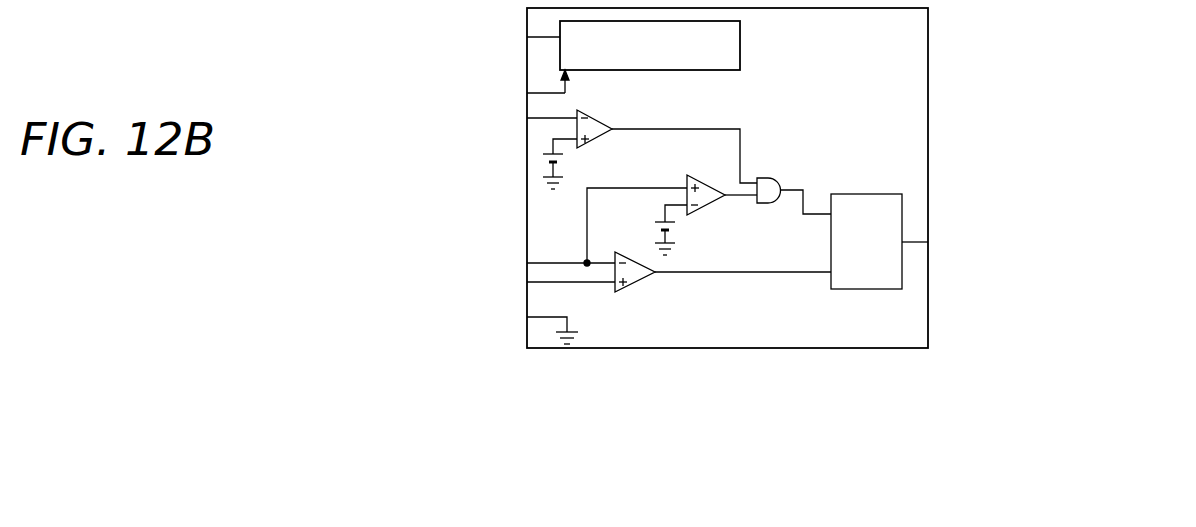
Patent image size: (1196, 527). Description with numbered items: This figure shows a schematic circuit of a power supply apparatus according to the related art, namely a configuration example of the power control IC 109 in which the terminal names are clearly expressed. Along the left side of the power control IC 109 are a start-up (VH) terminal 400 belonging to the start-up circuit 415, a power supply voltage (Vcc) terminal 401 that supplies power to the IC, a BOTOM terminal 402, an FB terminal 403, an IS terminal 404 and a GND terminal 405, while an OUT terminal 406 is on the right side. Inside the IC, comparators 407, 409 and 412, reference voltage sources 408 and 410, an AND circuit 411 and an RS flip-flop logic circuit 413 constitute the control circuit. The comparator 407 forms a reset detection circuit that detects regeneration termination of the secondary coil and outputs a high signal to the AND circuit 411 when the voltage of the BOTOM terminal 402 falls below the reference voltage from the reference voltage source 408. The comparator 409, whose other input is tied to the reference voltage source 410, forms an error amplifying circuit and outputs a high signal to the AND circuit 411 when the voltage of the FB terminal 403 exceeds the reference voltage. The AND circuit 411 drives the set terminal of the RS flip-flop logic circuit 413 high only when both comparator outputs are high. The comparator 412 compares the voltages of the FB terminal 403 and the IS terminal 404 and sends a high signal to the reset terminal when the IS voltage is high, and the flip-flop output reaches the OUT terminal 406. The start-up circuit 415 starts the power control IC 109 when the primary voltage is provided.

The power control IC 109 is at (527, 186).
The start-up (VH) terminal 400 is at (395, 42).
The power supply voltage (Vcc) terminal 401 is at (382, 96).
The BOTOM terminal 402 is at (355, 124).
The FB terminal 403 is at (395, 265).
The IS terminal 404 is at (399, 288).
The GND terminal 405 is at (382, 324).
The OUT terminal 406 is at (1072, 241).
The comparator 407 is at (631, 110).
The reference voltage source 408 is at (563, 162).
The comparator 409 is at (706, 176).
The reference voltage source 410 is at (675, 230).
The AND circuit 411 is at (771, 177).
The comparator 412 is at (637, 288).
The RS flip-flop logic circuit 413 is at (867, 194).
The start-up circuit 415 is at (740, 41).